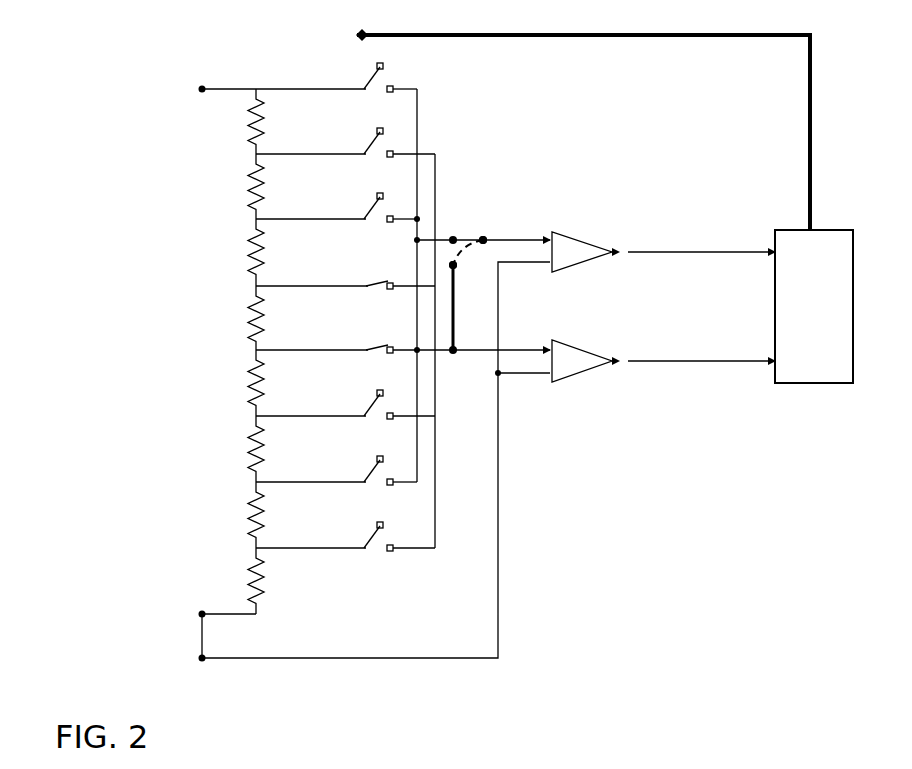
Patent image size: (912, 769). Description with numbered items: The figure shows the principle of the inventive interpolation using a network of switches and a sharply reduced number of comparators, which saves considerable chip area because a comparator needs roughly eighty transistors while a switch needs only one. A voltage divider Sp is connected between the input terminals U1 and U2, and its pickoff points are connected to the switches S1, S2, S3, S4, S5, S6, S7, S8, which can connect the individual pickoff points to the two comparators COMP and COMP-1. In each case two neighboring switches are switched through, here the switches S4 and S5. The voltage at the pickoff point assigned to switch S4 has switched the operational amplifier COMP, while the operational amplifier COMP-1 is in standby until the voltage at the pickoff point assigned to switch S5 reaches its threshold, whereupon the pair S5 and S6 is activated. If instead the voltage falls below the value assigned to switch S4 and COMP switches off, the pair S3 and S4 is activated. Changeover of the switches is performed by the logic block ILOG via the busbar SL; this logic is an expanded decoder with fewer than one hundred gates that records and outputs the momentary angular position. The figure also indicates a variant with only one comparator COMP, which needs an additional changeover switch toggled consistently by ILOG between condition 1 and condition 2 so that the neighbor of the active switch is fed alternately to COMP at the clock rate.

The voltage divider Sp is at (208, 128).
The first input voltage terminal U1 is at (200, 93).
The second input voltage terminal U2 is at (347, 464).
The switch S1 is at (345, 536).
The switch S2 is at (336, 470).
The switch S3 is at (345, 404).
The switch S4 is at (403, 338).
The switch S5 is at (345, 274).
The switch S6 is at (336, 207).
The switch S7 is at (345, 142).
The switch S8 is at (336, 77).
The condition 1 is at (466, 226).
The condition 2 is at (446, 275).
The comparator COMP is at (589, 259).
The comparator COMP-1 is at (592, 367).
The logic ILOG is at (740, 306).
The busbar SL is at (808, 142).